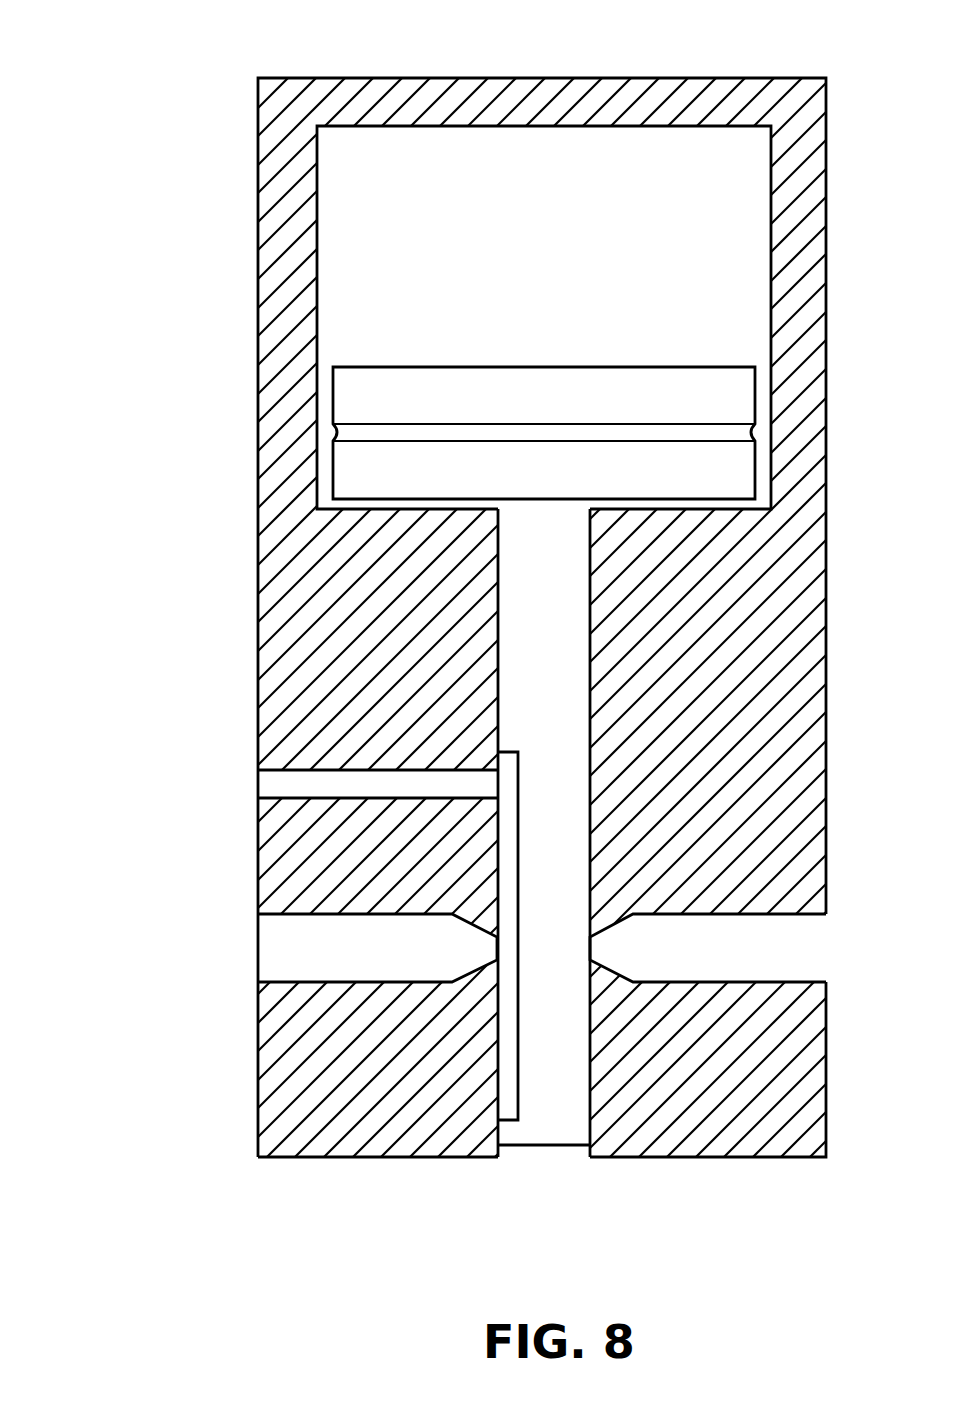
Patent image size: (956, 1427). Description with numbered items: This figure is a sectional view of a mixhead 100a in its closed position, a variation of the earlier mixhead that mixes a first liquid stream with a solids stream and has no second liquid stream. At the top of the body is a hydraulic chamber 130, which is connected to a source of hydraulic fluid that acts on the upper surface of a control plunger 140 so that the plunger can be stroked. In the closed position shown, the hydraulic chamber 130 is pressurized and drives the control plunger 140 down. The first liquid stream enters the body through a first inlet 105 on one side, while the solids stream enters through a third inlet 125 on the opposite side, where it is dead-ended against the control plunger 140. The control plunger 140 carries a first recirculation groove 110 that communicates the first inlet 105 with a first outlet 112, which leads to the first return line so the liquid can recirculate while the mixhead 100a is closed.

The mixhead 100a is at (240, 62).
The hydraulic chamber 130 is at (687, 245).
The control plunger 140 is at (525, 664).
The first outlet 112 is at (293, 782).
The first inlet 105 is at (365, 968).
The third inlet 125 is at (730, 968).
The first recirculation groove 110 is at (508, 1085).